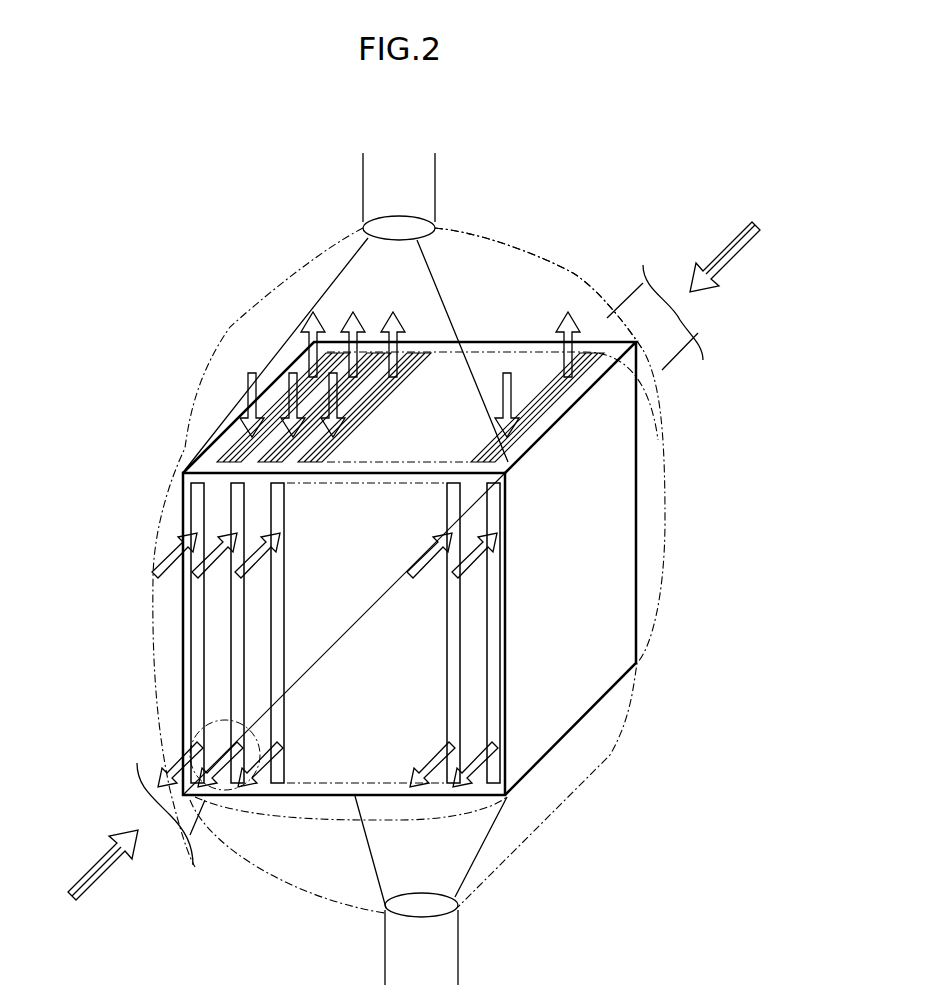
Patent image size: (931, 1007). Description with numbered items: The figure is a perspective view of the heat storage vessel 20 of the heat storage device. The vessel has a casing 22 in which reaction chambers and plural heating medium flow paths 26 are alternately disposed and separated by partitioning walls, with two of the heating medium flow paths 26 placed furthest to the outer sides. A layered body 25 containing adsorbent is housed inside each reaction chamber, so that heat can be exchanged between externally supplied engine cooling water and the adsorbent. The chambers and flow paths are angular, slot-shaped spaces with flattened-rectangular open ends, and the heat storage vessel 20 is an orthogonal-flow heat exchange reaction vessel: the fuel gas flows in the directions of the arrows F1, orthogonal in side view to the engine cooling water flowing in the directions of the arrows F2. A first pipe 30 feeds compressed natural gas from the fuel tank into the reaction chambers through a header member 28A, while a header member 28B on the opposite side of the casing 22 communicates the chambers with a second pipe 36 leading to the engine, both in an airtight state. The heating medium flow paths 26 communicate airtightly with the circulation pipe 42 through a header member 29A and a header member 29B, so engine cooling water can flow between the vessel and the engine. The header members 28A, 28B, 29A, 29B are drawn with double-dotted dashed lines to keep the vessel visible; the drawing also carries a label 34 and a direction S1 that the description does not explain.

The heat storage vessel 20 is at (581, 758).
The casing 22 is at (585, 677).
The layered body 25 is at (282, 425).
The heating medium flow path 26 is at (200, 607).
The header member 28A is at (270, 880).
The header member 28B is at (550, 258).
The header member 29A is at (303, 823).
The header member 29B is at (663, 438).
The first pipe 30 is at (458, 953).
The first flow passage 34 is at (245, 450).
The second pipe 36 is at (363, 182).
The circulation pipe 42 is at (683, 352).
The arrows F1 is at (250, 400).
The arrows F2 is at (165, 548).
The stacking direction S1 is at (732, 262).